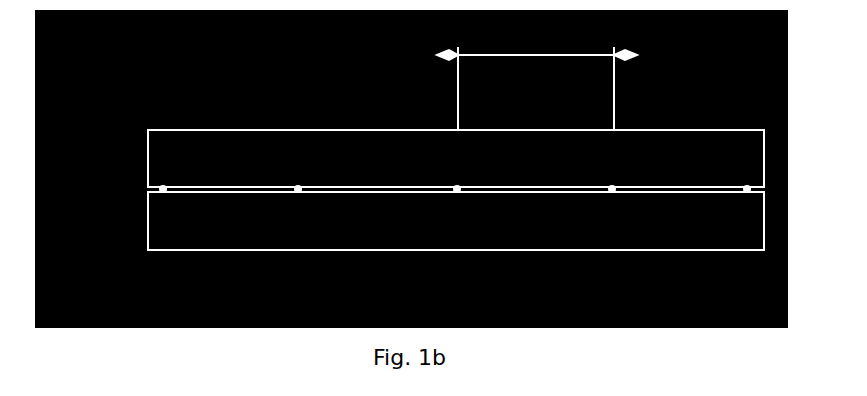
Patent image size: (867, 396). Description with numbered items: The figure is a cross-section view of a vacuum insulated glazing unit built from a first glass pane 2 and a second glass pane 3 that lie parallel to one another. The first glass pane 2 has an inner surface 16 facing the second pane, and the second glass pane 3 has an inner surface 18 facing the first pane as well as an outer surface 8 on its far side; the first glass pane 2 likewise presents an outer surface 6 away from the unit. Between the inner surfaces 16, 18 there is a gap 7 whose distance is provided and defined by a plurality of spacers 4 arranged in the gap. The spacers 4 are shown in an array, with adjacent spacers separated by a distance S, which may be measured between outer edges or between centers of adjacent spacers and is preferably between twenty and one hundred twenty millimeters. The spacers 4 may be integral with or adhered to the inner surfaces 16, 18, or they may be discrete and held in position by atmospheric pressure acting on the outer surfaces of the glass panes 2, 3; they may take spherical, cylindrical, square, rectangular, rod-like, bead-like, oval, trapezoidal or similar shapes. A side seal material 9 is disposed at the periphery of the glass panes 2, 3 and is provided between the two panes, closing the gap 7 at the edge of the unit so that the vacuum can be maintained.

The first glass pane 2 is at (148, 152).
The second glass pane 3 is at (148, 222).
The spacers 4 is at (300, 187).
The outer surface of first substrate 6 is at (714, 130).
The gap 7 is at (362, 192).
The outer surface 8 is at (708, 250).
The side seal material 9 is at (168, 192).
The inner surface 16 is at (698, 187).
The inner surface 18 is at (698, 192).
The distance S is at (537, 78).